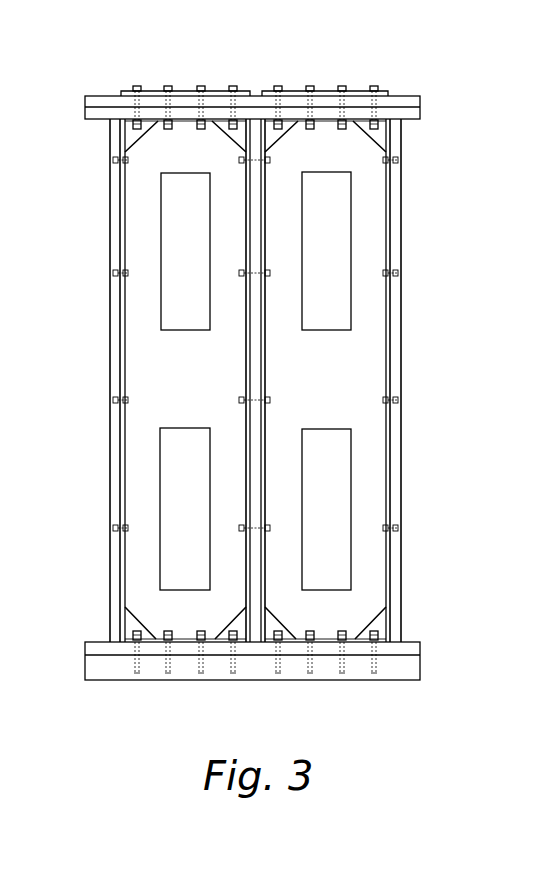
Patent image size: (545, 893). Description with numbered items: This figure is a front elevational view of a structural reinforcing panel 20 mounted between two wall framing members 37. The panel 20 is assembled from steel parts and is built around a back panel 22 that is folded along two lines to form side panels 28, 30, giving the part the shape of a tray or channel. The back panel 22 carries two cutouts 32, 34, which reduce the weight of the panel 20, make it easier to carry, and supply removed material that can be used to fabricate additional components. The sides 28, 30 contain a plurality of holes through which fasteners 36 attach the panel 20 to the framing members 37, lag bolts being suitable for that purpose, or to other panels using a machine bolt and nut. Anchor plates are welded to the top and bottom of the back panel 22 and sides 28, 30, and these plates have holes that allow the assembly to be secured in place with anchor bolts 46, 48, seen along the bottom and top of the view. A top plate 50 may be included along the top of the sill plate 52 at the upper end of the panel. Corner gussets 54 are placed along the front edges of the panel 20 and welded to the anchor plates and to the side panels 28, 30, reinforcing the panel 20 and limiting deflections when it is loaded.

The structural reinforcing panel 20 is at (85, 157).
The back panel 22 is at (368, 568).
The side panel 28 is at (258, 380).
The side panel 30 is at (122, 222).
The cutout 32 is at (175, 332).
The cutout 34 is at (198, 427).
The fastener 36 is at (118, 400).
The framing member 37 is at (401, 228).
The anchor bolt 46 is at (137, 660).
The anchor bolt 48 is at (378, 88).
The top plate 50 is at (298, 88).
The sill plate 52 is at (418, 104).
The corner gusset 54 is at (133, 625).